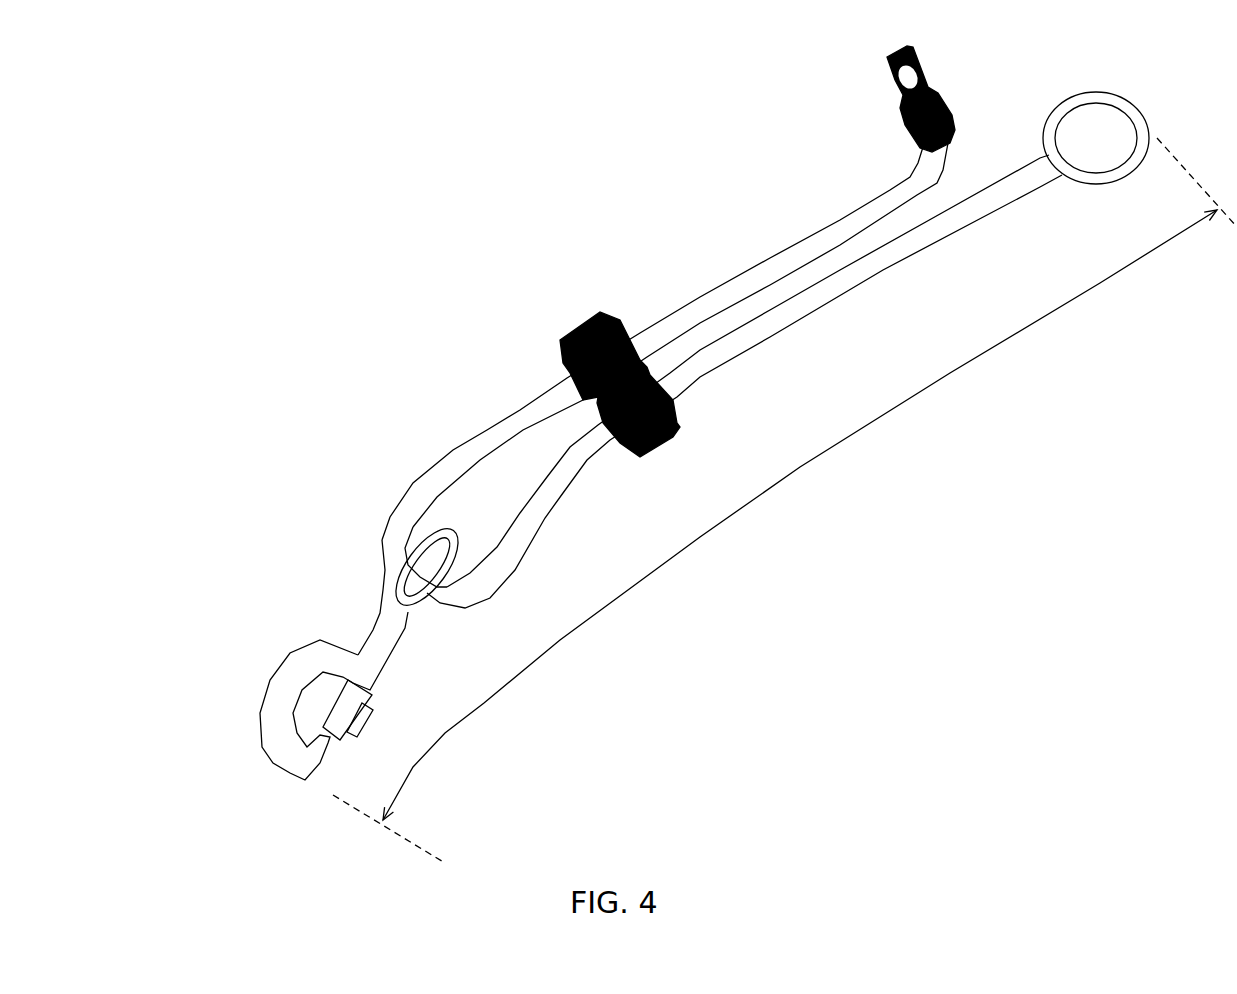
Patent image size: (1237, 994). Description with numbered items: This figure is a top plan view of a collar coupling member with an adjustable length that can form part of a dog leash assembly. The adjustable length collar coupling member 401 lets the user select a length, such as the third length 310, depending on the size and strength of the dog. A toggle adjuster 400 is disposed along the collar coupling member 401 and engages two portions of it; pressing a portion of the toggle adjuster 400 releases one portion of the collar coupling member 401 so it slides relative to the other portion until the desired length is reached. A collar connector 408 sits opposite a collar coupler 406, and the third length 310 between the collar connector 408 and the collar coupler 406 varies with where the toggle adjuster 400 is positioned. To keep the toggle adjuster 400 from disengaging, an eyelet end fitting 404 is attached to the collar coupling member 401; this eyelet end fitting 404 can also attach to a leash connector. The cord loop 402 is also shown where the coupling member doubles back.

The toggle adjuster 400 is at (560, 340).
The adjustable length collar coupling member 401 is at (683, 307).
The cord loop 402 is at (373, 553).
The eyelet end fitting 404 is at (903, 127).
The collar coupler 406 is at (1060, 112).
The collar connector 408 is at (290, 682).
The third length 310 is at (800, 467).